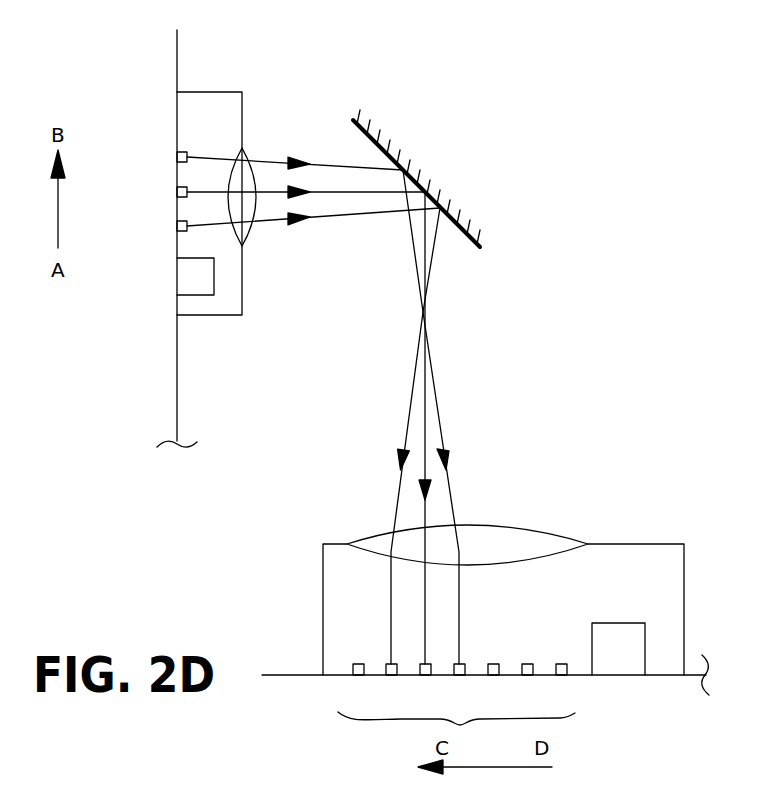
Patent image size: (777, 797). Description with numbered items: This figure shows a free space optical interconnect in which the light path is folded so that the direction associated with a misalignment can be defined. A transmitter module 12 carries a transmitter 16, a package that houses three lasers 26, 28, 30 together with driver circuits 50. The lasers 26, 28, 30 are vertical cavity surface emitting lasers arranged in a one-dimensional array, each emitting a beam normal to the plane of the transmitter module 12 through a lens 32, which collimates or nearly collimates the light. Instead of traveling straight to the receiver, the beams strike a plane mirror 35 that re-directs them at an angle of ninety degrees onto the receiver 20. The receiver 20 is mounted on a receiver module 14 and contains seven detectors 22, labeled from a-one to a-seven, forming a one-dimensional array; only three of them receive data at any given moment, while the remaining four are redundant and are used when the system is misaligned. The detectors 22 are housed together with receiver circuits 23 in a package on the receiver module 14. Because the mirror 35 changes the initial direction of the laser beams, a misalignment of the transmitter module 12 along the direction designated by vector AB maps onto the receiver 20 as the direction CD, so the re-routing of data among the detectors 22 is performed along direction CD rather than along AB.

The transmitter module 12 is at (175, 68).
The transmitter 16 is at (210, 92).
The laser 26 is at (178, 157).
The laser 28 is at (178, 192).
The laser 30 is at (178, 226).
The lens 32 is at (242, 172).
The plane mirror 35 is at (372, 120).
The driver circuits 50 is at (187, 281).
The receiver 20 is at (323, 617).
The receiver module 14 is at (292, 676).
The detectors 22 is at (405, 720).
The receiver circuits 23 is at (620, 660).